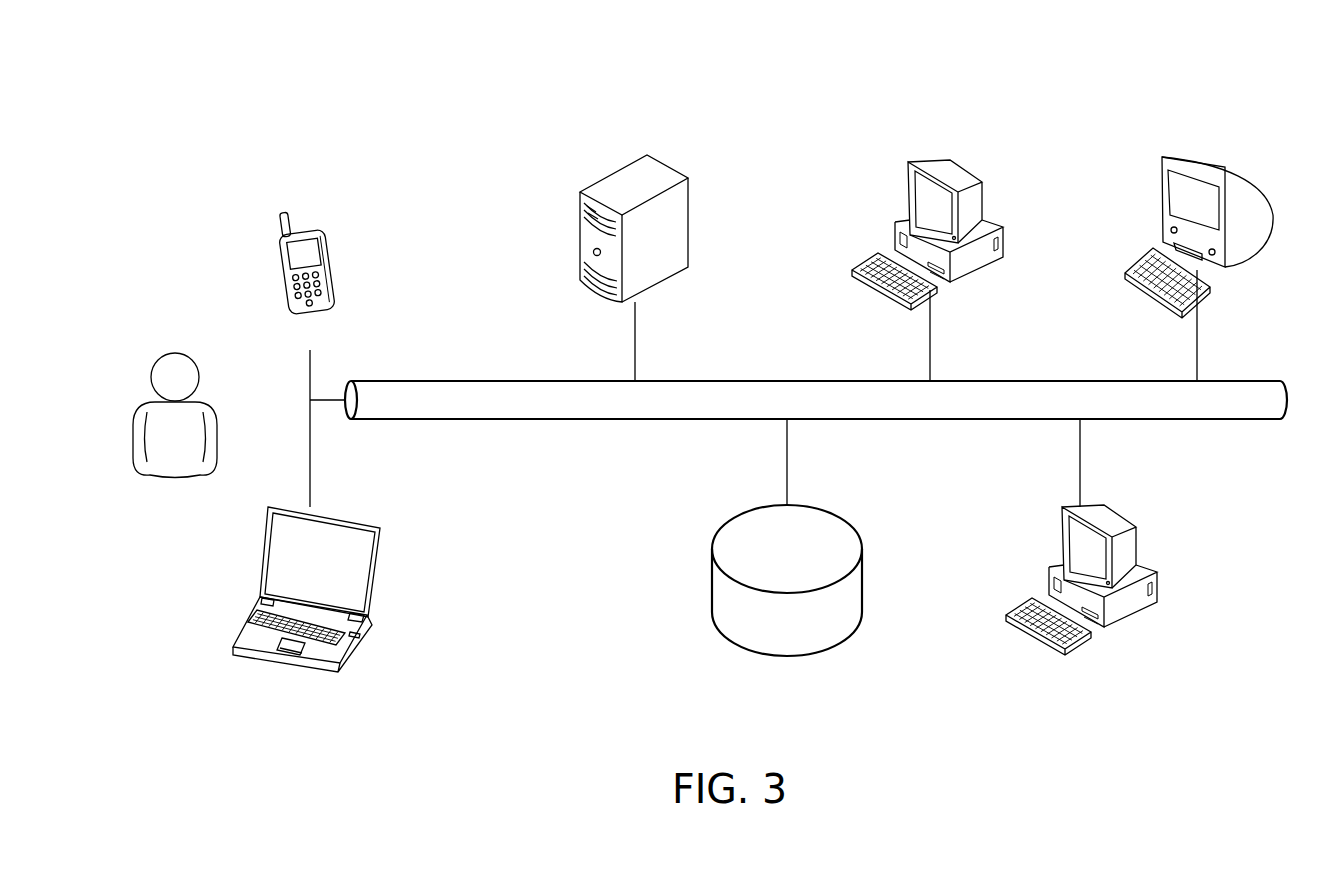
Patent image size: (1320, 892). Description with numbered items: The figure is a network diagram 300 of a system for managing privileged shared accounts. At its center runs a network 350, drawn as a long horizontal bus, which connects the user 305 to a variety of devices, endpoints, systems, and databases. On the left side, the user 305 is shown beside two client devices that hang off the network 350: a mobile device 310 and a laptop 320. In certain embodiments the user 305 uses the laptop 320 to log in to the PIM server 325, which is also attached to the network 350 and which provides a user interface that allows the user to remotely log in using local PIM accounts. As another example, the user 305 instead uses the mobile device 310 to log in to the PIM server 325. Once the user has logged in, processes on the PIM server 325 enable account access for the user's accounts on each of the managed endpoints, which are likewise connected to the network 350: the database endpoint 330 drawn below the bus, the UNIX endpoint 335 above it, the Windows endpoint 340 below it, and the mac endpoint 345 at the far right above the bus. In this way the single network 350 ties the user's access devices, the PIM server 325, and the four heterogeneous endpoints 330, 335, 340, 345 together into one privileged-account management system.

The network diagram 300 is at (265, 143).
The user 305 is at (173, 352).
The mobile device 310 is at (313, 233).
The laptop 320 is at (290, 703).
The PIM server 325 is at (668, 162).
The database endpoint 330 is at (795, 687).
The UNIX endpoint 335 is at (968, 167).
The Windows endpoint 340 is at (1092, 687).
The mac endpoint 345 is at (1235, 165).
The network 350 is at (1233, 420).